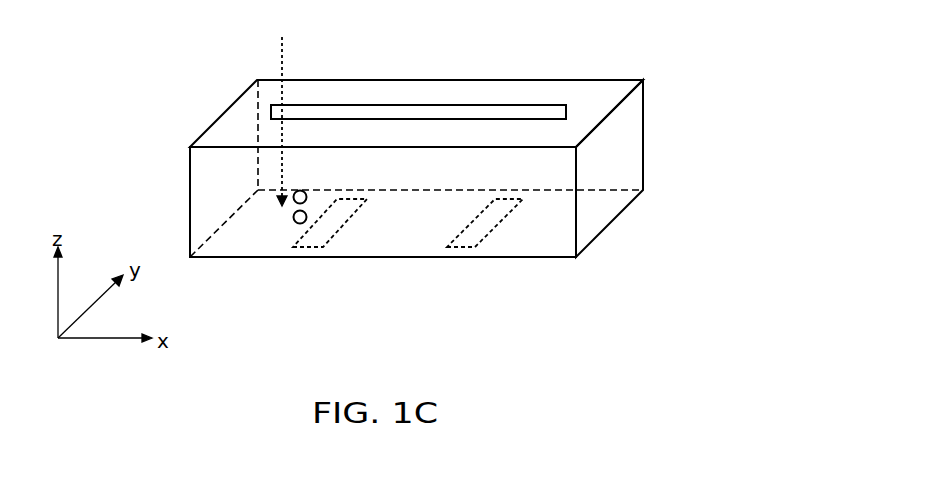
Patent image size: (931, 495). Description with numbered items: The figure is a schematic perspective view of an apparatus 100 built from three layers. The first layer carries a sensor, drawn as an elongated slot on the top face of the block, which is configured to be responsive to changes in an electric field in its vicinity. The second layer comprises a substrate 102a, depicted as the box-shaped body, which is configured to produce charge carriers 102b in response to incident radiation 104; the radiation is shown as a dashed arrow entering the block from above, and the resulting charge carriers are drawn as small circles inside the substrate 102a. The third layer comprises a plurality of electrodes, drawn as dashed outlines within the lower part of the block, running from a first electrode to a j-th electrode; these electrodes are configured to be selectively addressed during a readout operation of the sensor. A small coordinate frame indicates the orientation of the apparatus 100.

The apparatus 100 is at (750, 88).
The substrate 102a is at (632, 154).
The charge carriers 102b is at (310, 207).
The incident radiation 104 is at (282, 60).